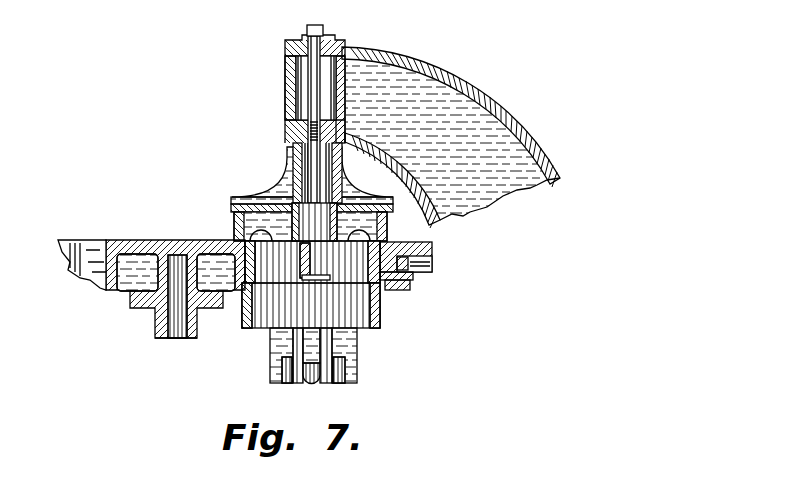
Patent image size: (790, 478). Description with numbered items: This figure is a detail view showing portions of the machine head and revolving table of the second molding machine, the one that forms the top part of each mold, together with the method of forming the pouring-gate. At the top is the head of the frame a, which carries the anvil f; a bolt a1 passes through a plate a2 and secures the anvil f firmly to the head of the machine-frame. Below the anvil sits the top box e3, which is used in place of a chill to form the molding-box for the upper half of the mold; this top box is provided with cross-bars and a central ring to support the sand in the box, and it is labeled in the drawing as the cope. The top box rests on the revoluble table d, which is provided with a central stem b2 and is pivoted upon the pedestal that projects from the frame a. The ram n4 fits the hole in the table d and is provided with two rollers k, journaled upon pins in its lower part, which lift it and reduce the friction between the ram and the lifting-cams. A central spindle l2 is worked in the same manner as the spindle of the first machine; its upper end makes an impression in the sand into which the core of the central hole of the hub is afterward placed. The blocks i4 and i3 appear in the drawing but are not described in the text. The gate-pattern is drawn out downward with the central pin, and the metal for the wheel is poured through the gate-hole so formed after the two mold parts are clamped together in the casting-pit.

The frame a is at (451, 137).
The bolt a1 is at (323, 28).
The plate a2 is at (336, 40).
The anvil f is at (280, 195).
The top box e3 is at (232, 221).
The revoluble table d is at (140, 258).
The central stem b2 is at (157, 323).
The middle block i4 is at (312, 262).
The key block i3 is at (321, 279).
The ram n4 is at (311, 305).
The rollers k is at (338, 370).
The central spindle l2 is at (312, 378).
The cope bracket cope is at (388, 233).